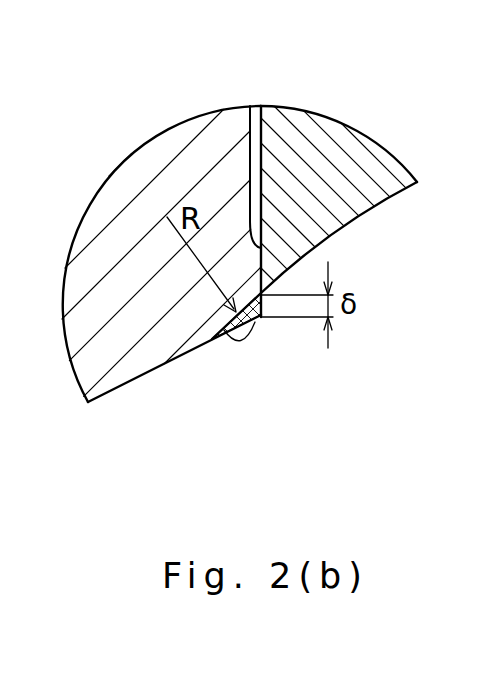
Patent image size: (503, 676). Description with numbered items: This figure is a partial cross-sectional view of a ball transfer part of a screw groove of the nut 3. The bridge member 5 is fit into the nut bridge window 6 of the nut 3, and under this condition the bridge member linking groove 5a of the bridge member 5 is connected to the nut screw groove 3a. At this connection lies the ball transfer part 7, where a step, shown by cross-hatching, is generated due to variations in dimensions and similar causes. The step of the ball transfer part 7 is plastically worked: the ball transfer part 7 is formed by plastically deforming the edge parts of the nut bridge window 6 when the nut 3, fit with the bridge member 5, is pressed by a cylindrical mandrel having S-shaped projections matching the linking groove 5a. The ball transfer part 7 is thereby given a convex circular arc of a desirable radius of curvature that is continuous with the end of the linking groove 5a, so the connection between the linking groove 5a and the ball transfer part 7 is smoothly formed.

The nut 3 is at (127, 197).
The nut screw groove 3a is at (142, 374).
The bridge member 5 is at (321, 142).
The bridge member linking groove 5a is at (338, 231).
The nut bridge window 6 is at (254, 128).
The ball transfer part 7 is at (217, 330).